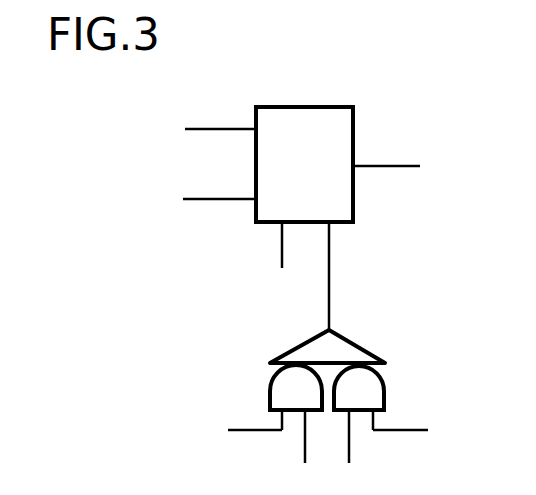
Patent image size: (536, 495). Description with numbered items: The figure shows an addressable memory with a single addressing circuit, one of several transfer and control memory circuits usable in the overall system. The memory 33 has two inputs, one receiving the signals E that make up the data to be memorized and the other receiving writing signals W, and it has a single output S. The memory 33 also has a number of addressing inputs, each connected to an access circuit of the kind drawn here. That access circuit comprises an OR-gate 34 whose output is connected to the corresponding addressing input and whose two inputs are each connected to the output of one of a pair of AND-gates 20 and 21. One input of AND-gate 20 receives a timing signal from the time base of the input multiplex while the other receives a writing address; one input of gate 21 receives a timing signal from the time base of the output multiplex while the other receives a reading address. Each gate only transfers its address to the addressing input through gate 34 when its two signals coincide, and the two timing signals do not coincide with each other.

The memory 33 is at (343, 135).
The OR-gate 34 is at (340, 348).
The AND-gate 20 is at (287, 385).
The AND-gate 21 is at (370, 385).